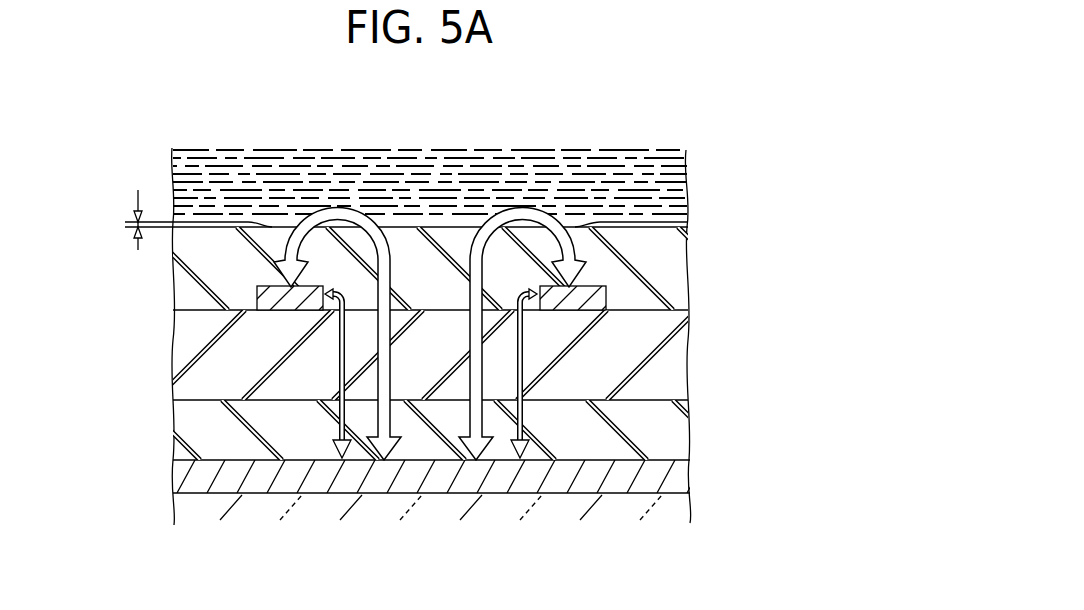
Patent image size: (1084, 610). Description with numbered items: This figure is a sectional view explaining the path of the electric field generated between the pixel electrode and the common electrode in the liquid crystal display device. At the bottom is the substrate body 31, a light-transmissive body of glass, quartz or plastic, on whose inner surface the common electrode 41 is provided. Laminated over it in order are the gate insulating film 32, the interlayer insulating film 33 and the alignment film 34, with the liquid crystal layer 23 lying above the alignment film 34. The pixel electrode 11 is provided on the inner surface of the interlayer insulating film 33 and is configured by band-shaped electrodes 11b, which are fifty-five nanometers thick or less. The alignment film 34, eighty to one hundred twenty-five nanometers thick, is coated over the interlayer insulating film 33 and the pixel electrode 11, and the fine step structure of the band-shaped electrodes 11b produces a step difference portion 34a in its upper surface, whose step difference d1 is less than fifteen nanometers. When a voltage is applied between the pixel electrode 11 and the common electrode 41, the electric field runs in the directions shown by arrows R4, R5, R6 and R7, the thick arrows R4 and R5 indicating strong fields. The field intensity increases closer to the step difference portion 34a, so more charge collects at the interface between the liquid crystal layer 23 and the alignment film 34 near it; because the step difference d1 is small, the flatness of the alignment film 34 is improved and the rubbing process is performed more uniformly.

The liquid crystal layer 23 is at (667, 183).
The step difference portion 34a is at (277, 220).
The step difference d1 is at (137, 223).
The alignment film 34 is at (667, 250).
The interlayer insulating film 33 is at (668, 358).
The gate insulating film 32 is at (676, 433).
The common electrode 41 is at (676, 477).
The substrate body 31 is at (676, 512).
The band-shaped electrode 11b is at (256, 289).
The pixel electrode 11 is at (607, 292).
The arrow R4 is at (338, 208).
The arrow R5 is at (525, 208).
The arrow R6 is at (340, 432).
The arrow R7 is at (527, 432).